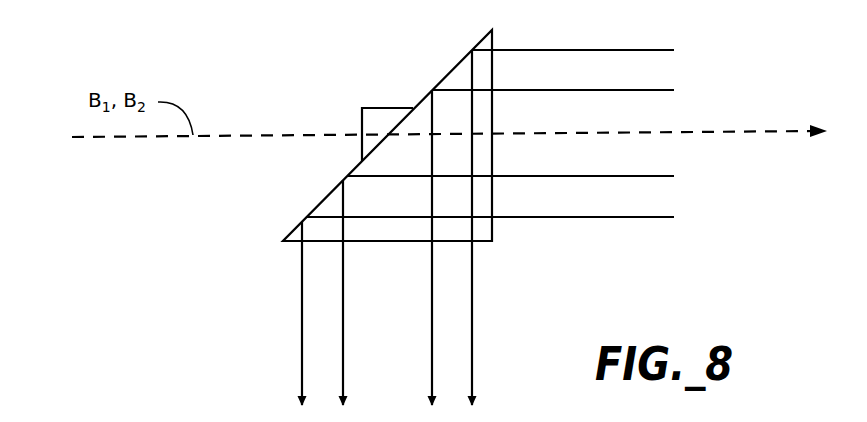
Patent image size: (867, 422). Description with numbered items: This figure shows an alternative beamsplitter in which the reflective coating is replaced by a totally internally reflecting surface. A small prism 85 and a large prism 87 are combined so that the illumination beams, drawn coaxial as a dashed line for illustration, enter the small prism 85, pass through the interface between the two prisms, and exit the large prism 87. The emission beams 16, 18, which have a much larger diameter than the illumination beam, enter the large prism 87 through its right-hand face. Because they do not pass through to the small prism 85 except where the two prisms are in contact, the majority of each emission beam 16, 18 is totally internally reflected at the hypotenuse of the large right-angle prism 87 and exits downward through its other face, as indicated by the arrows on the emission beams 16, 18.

The emission beam 16 is at (602, 76).
The emission beam 18 is at (580, 198).
The small prism 85 is at (375, 108).
The large prism 87 is at (300, 233).